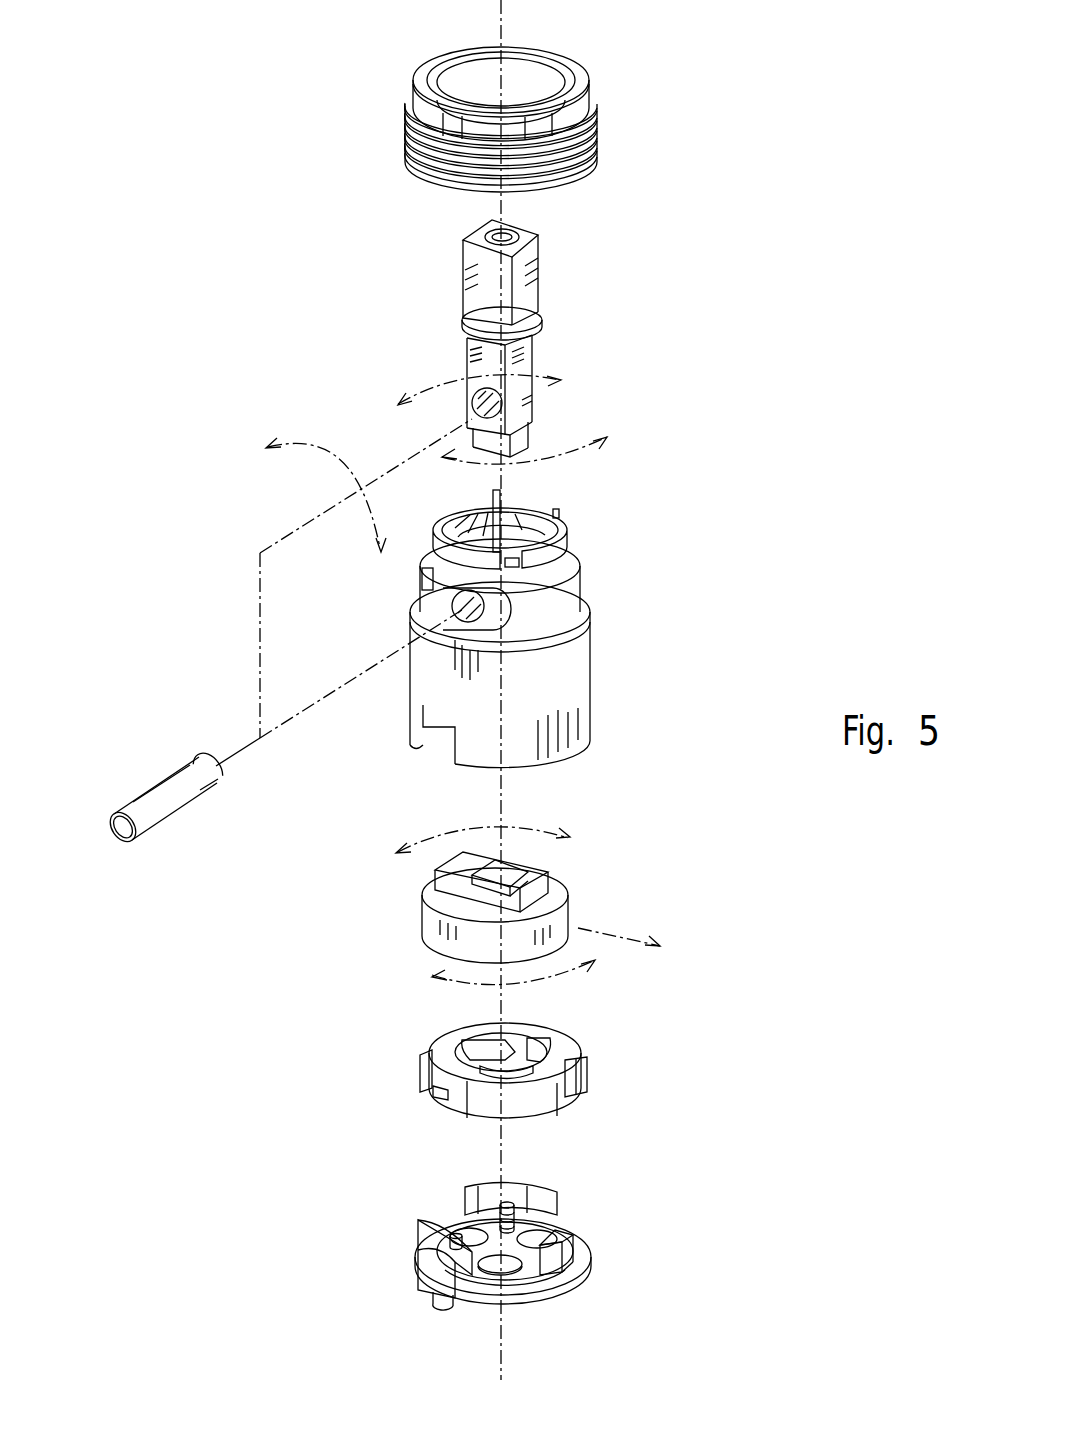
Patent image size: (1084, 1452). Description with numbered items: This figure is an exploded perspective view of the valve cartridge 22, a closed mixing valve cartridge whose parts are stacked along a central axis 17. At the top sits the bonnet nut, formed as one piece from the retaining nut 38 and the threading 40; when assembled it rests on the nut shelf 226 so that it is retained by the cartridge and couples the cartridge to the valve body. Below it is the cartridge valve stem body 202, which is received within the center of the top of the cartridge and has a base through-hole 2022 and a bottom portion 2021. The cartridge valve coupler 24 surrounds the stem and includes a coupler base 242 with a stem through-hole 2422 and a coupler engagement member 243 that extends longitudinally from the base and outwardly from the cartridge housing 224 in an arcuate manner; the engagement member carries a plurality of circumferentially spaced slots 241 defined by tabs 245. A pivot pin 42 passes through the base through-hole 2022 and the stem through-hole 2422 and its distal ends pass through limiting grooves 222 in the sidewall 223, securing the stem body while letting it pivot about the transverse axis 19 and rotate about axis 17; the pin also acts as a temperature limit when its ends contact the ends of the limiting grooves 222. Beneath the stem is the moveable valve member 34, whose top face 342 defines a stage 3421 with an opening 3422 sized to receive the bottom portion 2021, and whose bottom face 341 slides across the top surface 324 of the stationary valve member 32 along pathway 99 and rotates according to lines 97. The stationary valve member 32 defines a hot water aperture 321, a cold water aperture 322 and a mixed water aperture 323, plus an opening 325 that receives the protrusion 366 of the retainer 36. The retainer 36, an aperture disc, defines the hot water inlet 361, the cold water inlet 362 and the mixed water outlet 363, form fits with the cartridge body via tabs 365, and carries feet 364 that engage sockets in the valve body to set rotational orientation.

The axis 17 is at (503, 10).
The transverse axis 19 is at (244, 748).
The valve cartridge 22 is at (845, 215).
The cartridge valve coupler 24 is at (503, 592).
The stationary valve member 32 is at (548, 1077).
The moveable valve member 34 is at (503, 861).
The retainer 36 is at (536, 1264).
The retaining nut 38 is at (598, 70).
The threading 40 is at (492, 119).
The pivot pin 42 is at (136, 768).
The lines 97 is at (453, 825).
The pathway 99 is at (636, 940).
The cartridge valve stem body 202 is at (527, 338).
The limiting grooves 222 is at (428, 594).
The sidewall 223 is at (578, 560).
The cartridge housing 224 is at (568, 690).
The nut shelf 226 is at (580, 575).
The slots 241 is at (520, 570).
The coupler base 242 is at (450, 598).
The coupler engagement member 243 is at (478, 515).
The tabs 245 is at (445, 535).
The hot water aperture 321 is at (570, 1048).
The cold water aperture 322 is at (490, 1082).
The mixed water aperture 323 is at (446, 1036).
The top surface 324 is at (433, 1037).
The opening 325 is at (588, 1092).
The bottom face 341 is at (425, 950).
The top face 342 is at (484, 844).
The hot water inlet 361 is at (500, 1266).
The cold water inlet 362 is at (520, 1230).
The mixed water outlet 363 is at (460, 1234).
The feet 364 is at (440, 1305).
The tabs 365 is at (532, 1188).
The protrusion 366 is at (570, 1258).
The bottom portion 2021 is at (540, 447).
The base through-hole 2022 is at (467, 393).
The stem through-hole 2422 is at (455, 727).
The stage 3421 is at (548, 888).
The opening 3422 is at (520, 868).